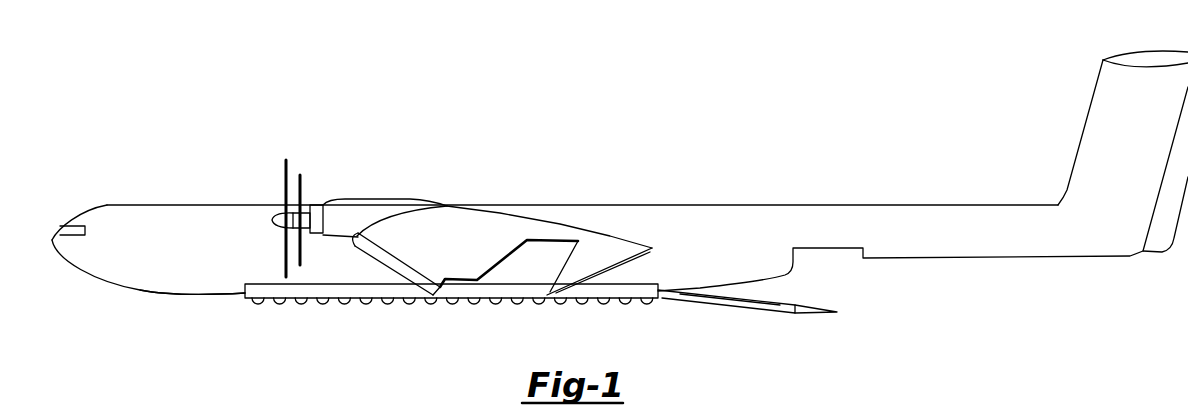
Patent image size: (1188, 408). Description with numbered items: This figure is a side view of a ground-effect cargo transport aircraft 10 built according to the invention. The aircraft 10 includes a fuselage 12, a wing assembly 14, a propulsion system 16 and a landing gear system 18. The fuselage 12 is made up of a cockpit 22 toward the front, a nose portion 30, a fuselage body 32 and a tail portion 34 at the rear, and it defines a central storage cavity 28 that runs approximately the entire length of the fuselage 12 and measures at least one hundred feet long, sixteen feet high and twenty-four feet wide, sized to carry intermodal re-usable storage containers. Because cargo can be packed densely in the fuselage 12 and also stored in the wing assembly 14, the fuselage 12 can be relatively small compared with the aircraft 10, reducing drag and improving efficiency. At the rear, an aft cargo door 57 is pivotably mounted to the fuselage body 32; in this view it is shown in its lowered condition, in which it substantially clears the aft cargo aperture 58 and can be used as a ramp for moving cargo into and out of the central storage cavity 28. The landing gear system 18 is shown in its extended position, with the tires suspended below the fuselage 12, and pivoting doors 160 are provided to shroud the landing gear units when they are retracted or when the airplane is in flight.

The ground-effect cargo transport aircraft 10 is at (385, 112).
The fuselage 12 is at (637, 232).
The wing assembly 14 is at (450, 232).
The propulsion system 16 is at (338, 190).
The landing gear system 18 is at (332, 312).
The cockpit 22 is at (105, 227).
The central storage cavity 28 is at (662, 263).
The nose portion 30 is at (85, 278).
The fuselage body 32 is at (208, 298).
The tail portion 34 is at (1107, 235).
The aft cargo door 57 is at (728, 303).
The aft cargo aperture 58 is at (797, 293).
The pivoting doors 160 is at (615, 302).